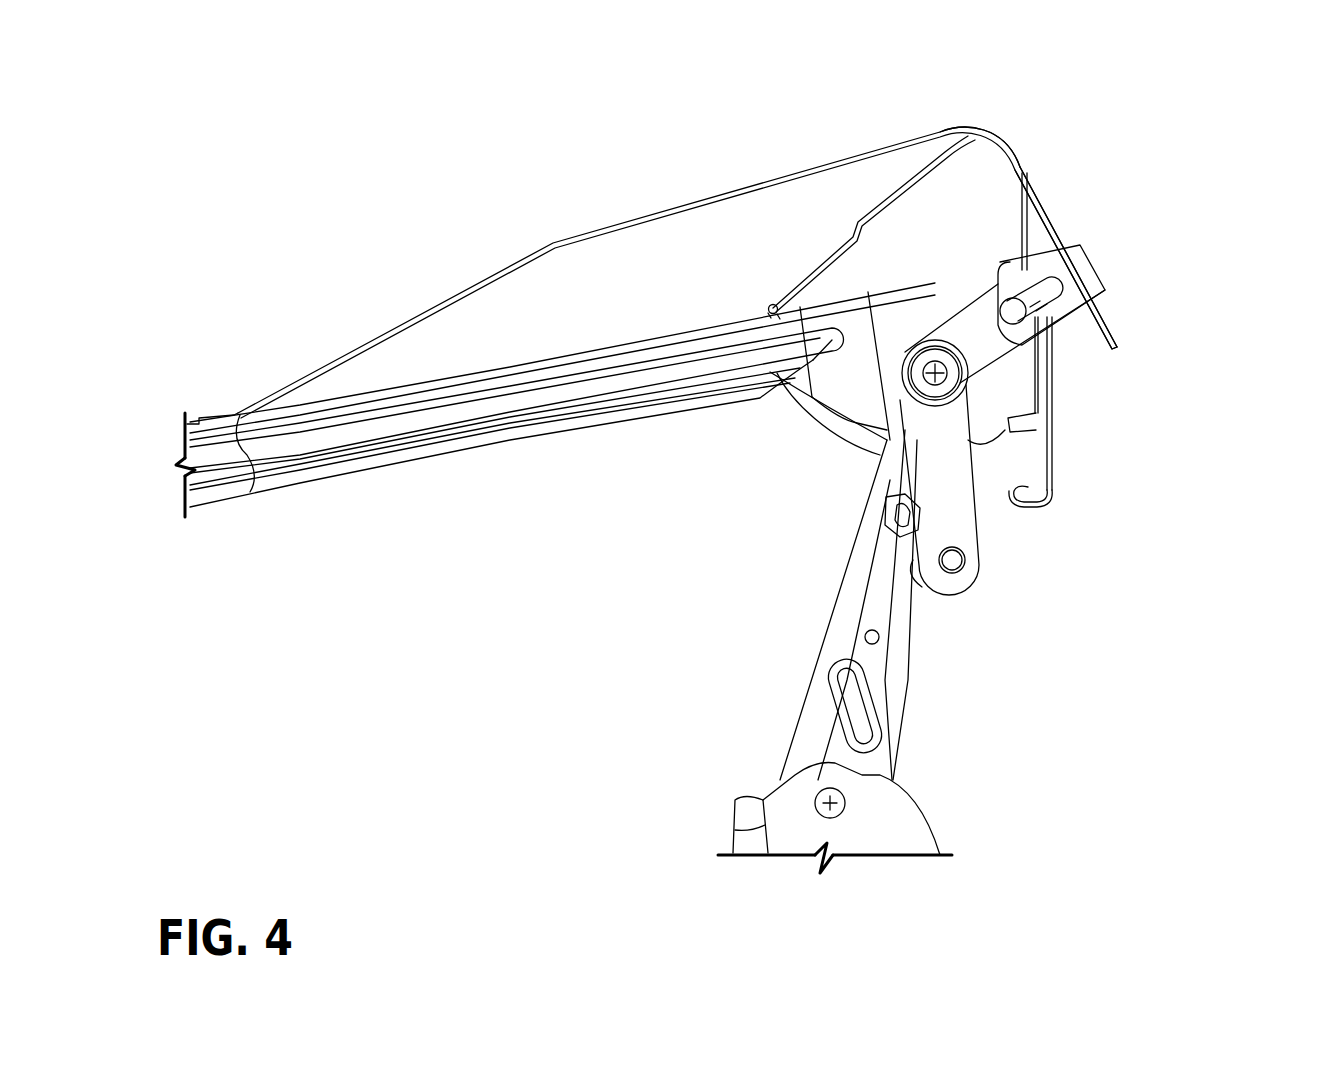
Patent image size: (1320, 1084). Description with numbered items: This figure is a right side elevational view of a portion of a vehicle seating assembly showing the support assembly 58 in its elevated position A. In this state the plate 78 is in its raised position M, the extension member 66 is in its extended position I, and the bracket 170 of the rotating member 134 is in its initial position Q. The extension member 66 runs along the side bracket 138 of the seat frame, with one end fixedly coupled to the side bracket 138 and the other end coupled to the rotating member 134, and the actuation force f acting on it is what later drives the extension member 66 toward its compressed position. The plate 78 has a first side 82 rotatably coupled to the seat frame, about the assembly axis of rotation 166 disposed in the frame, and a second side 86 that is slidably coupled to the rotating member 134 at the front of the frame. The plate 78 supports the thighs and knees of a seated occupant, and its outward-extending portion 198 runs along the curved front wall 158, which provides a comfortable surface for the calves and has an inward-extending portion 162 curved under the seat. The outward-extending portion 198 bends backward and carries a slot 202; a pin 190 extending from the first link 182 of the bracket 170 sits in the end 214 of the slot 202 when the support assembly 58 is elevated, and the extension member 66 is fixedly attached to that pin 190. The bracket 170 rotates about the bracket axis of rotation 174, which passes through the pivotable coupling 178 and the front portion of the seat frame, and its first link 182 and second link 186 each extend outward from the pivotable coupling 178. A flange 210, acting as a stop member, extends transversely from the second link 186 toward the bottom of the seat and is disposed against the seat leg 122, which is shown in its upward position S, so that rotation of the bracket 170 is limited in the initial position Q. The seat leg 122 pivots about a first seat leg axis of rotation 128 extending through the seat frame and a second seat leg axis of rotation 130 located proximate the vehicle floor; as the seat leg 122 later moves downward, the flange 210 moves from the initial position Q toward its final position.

The extension member 66 is at (655, 212).
The first side 82 is at (810, 273).
The assembly axis of rotation 166 is at (771, 306).
The actuation force f is at (807, 145).
The end of the slot 214 is at (1013, 298).
The elevated position A is at (1013, 123).
The support assembly 58 is at (1035, 141).
The raised position M is at (1046, 168).
The plate 78 is at (1047, 213).
The slot 202 is at (1050, 247).
The outward-extending portion 198 is at (1065, 280).
The second side 86 is at (1087, 287).
The pin 190 is at (1017, 315).
The first link 182 is at (987, 342).
The front wall 158 is at (1053, 393).
The rotating member 134 is at (962, 381).
The inward-extending portion 162 is at (1025, 503).
The initial position Q is at (996, 515).
The flange 210 is at (960, 578).
The second link 186 is at (925, 585).
The second seat leg axis of rotation 130 is at (832, 806).
The upward position S is at (778, 728).
The seat leg 122 is at (860, 645).
The bracket 170 is at (935, 503).
The pivotable coupling 178 is at (926, 383).
The bracket axis of rotation 174 is at (895, 380).
The first seat leg axis of rotation 128 is at (895, 350).
The side bracket 138 is at (550, 380).
The extended position I is at (472, 278).